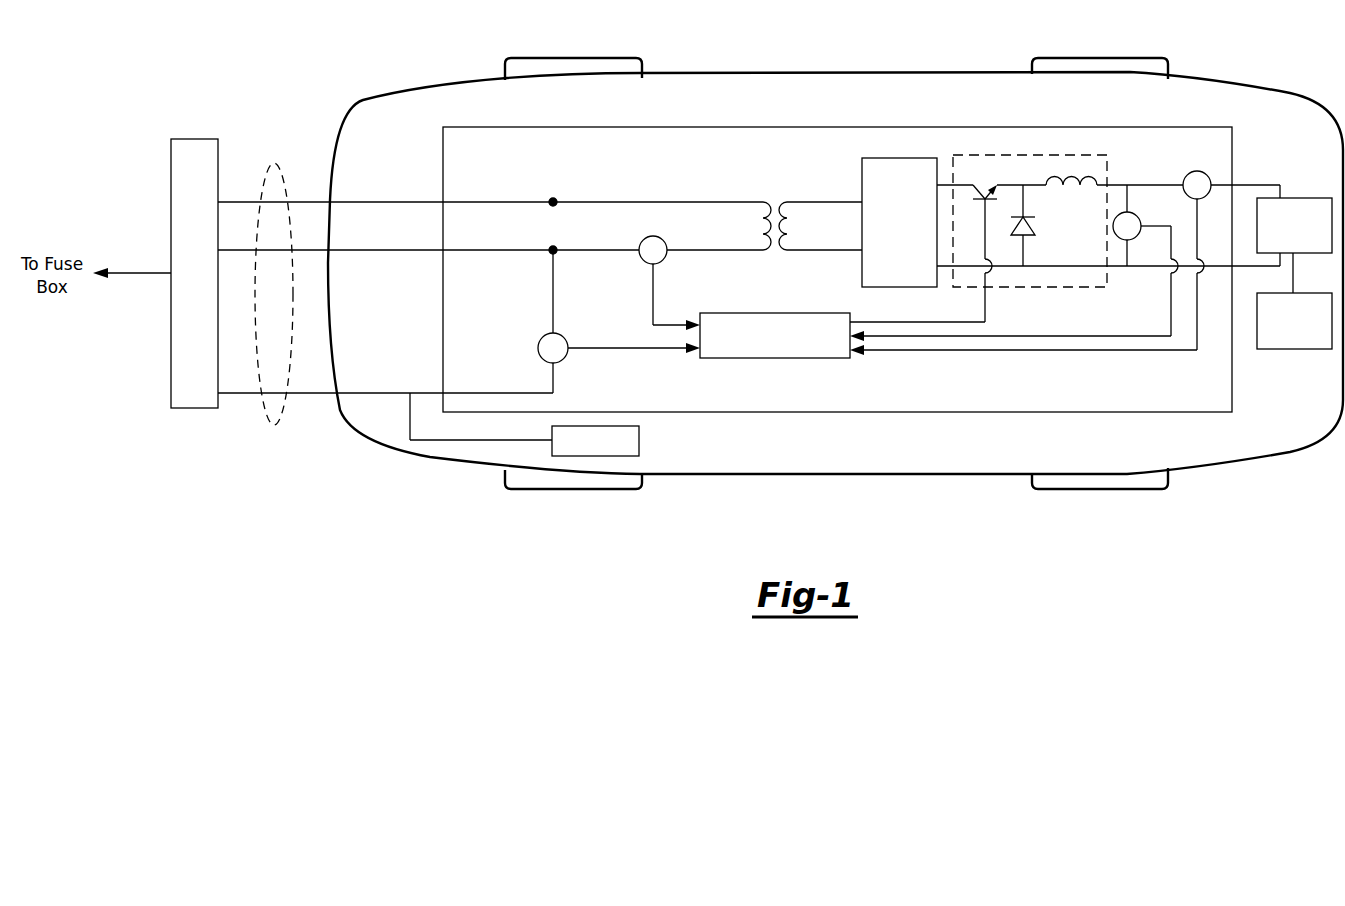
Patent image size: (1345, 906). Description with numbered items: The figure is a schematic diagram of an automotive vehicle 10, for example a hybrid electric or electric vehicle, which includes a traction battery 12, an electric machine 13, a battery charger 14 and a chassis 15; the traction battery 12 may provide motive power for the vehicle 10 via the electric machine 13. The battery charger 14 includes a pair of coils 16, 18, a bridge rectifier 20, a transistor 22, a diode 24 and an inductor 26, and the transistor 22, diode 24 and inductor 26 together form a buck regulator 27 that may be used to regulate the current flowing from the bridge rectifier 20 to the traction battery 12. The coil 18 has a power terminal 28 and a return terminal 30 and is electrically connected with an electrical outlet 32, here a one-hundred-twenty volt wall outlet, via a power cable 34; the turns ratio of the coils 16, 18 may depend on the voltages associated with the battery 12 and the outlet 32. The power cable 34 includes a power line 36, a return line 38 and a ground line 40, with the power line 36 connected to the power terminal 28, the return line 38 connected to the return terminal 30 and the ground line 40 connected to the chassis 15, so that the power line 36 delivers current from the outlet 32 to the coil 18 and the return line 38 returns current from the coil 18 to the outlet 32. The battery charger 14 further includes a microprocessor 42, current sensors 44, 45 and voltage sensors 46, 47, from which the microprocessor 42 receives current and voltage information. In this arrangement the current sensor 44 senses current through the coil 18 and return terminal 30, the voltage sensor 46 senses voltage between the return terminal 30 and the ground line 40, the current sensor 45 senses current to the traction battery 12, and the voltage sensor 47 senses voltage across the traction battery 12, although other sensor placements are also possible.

The automotive vehicle 10 is at (768, 72).
The traction battery 12 is at (1295, 198).
The electric machine 13 is at (1290, 349).
The battery charger 14 is at (820, 127).
The chassis 15 is at (639, 437).
The coil 16 is at (787, 198).
The coil 18 is at (763, 200).
The bridge rectifier 20 is at (902, 158).
The transistor 22 is at (985, 198).
The diode 24 is at (1035, 225).
The inductor 26 is at (1072, 176).
The buck regulator 27 is at (1004, 155).
The power terminal 28 is at (553, 200).
The return terminal 30 is at (553, 248).
The electrical outlet 32 is at (195, 139).
The power cable 34 is at (272, 163).
The power line 36 is at (312, 202).
The return line 38 is at (312, 250).
The ground line 40 is at (314, 393).
The microprocessor 42 is at (775, 313).
The current sensor 44 is at (663, 240).
The current sensor 45 is at (1188, 172).
The voltage sensor 46 is at (563, 334).
The voltage sensor 47 is at (1140, 239).